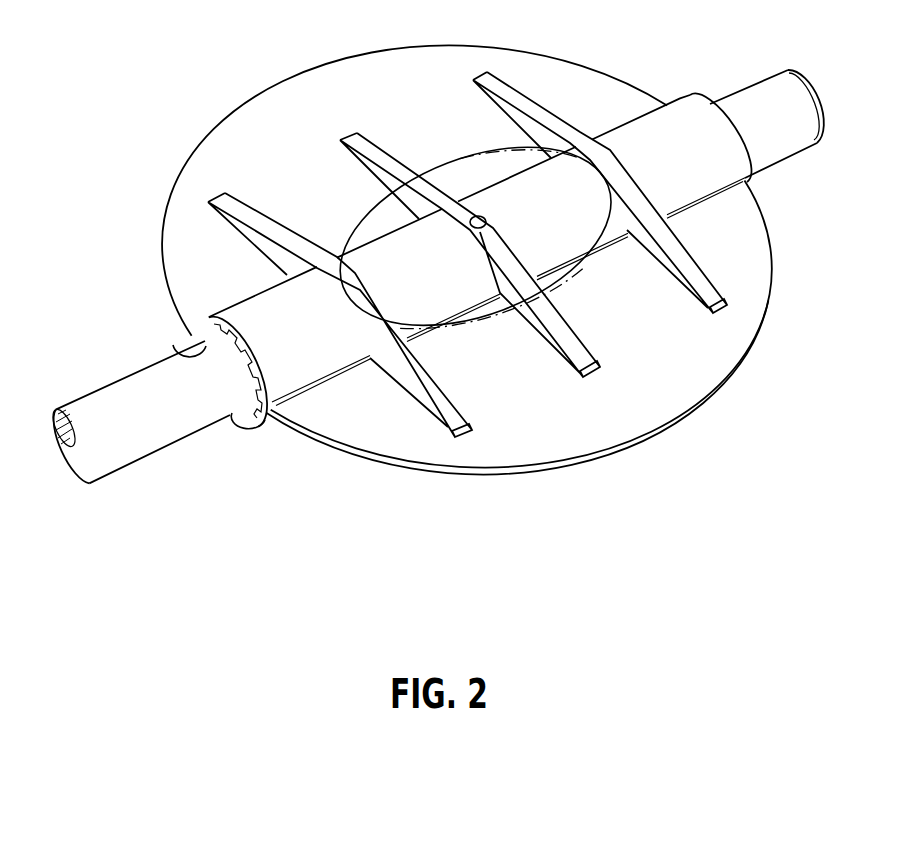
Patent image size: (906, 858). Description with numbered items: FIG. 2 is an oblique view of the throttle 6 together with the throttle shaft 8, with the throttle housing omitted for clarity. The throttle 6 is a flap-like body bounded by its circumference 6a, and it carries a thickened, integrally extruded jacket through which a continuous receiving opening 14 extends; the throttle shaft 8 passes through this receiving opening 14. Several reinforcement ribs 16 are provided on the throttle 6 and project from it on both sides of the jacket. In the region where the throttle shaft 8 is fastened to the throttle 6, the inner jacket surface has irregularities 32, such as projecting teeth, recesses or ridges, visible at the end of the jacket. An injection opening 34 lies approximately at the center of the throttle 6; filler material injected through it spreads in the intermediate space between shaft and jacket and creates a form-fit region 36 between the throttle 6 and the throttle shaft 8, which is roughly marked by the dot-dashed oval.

The throttle 6 is at (593, 422).
The circumference 6a is at (692, 412).
The throttle shaft 8 is at (125, 442).
The receiving opening 14 is at (180, 360).
The reinforcement rib 16 is at (368, 145).
The irregularities 32 is at (250, 414).
The injection opening 34 is at (477, 215).
The form-fit region 36 is at (583, 272).